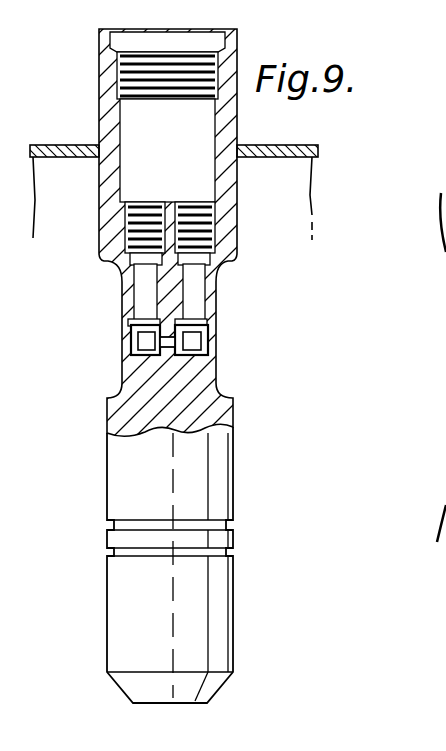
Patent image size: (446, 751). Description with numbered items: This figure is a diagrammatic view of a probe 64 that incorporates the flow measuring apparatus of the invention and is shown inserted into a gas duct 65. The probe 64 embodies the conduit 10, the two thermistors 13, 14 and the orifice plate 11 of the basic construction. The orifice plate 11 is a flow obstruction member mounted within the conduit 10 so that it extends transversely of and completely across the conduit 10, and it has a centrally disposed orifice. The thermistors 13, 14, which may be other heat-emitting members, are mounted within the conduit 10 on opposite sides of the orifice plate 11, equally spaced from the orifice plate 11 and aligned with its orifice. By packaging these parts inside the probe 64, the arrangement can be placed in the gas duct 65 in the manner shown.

The probe 64 is at (99, 118).
The gas duct 65 is at (267, 177).
The thermistor 13 is at (145, 337).
The thermistor 14 is at (205, 336).
The conduit 10 is at (207, 348).
The orifice plate 11 is at (168, 358).